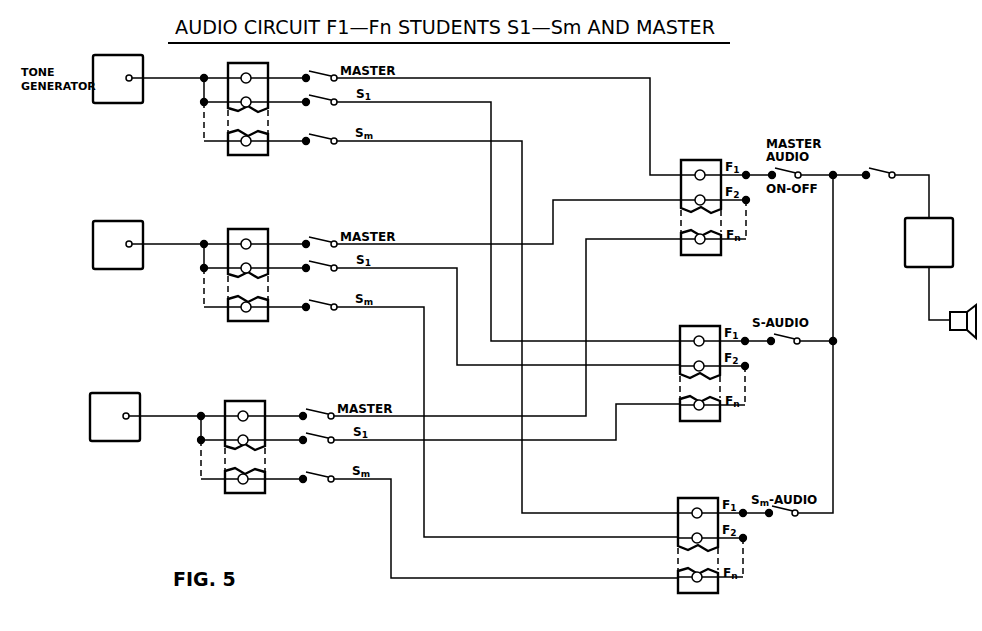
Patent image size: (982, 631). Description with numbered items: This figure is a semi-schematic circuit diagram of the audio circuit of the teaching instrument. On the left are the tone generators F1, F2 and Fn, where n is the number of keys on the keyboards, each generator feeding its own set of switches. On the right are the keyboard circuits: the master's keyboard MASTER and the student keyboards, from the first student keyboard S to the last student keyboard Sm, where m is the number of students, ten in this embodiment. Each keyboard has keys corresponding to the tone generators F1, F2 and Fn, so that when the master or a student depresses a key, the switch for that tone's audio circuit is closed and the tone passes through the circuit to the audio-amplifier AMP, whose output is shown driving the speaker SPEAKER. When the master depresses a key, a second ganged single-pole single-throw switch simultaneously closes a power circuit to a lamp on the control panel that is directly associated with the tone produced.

The tone generator F1 is at (244, 105).
The tone generator F2 is at (244, 271).
The tone generator Fn is at (241, 443).
The master's keyboard MASTER is at (753, 198).
The student keyboard S is at (756, 363).
The student keyboard Sm is at (754, 537).
The audio-amplifier AMP is at (907, 242).
The speaker SPEAKER is at (951, 308).